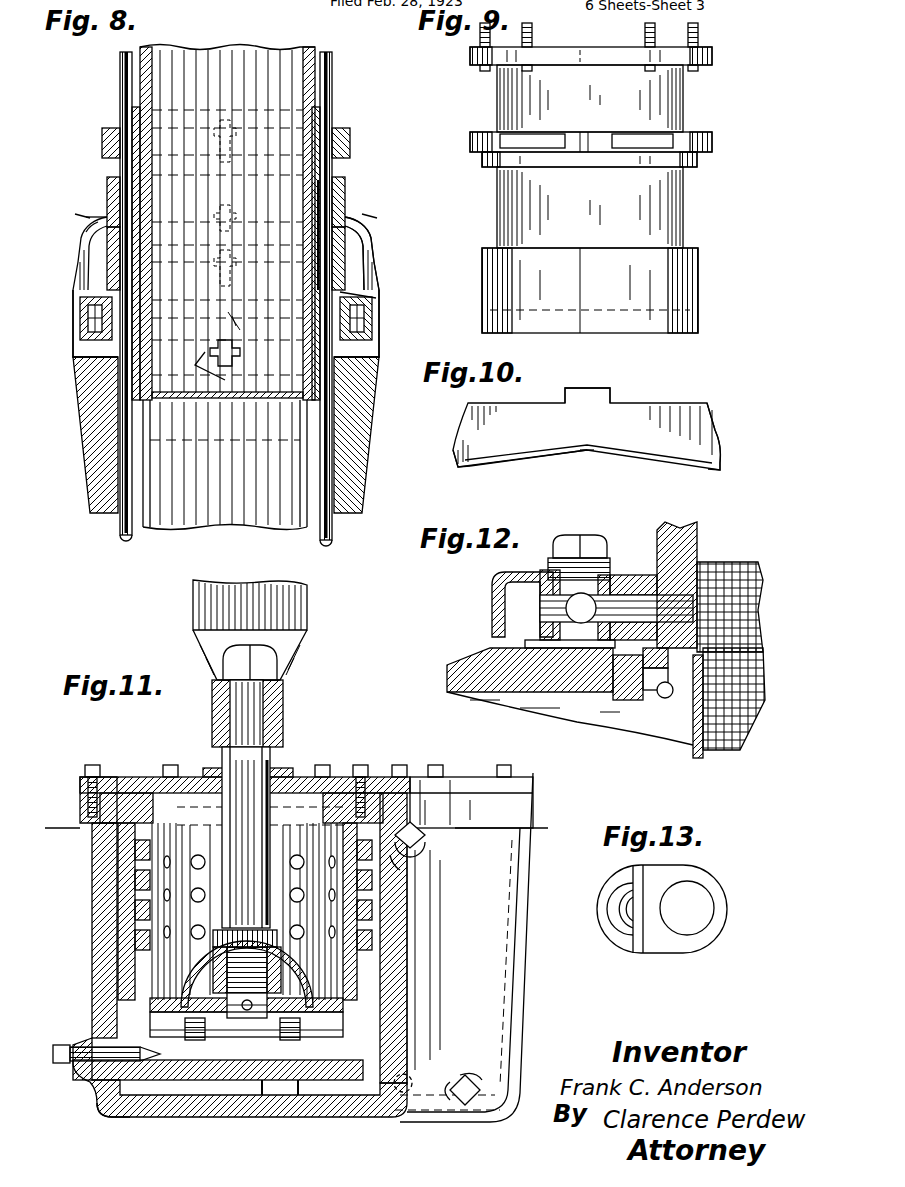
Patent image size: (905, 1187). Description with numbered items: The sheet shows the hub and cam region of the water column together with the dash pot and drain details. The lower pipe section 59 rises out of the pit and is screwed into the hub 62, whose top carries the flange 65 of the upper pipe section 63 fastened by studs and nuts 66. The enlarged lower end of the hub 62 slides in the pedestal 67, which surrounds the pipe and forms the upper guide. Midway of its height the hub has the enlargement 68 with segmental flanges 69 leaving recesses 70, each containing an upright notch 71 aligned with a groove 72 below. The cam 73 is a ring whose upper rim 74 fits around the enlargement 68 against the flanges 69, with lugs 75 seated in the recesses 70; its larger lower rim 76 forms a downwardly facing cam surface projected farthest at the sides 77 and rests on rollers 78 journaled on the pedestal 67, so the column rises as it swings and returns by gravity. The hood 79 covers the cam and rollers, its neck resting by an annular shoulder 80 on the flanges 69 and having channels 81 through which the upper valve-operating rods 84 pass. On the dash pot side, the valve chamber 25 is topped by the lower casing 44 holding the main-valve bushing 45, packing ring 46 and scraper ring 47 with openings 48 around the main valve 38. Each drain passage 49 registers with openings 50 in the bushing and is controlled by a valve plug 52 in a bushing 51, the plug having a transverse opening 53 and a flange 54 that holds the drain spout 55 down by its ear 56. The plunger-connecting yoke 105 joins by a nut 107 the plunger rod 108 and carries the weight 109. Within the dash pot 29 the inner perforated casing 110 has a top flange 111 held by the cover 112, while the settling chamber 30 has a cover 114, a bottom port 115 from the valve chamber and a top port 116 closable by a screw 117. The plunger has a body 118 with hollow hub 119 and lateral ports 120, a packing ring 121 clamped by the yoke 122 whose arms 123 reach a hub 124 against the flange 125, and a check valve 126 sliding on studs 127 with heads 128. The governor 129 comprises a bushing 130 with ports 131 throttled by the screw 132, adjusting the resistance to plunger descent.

In FIG. 12, the valve chamber 25 is at (472, 660).
In FIG. 11, the dash pot 29 is at (92, 903).
In FIG. 11, the settling chamber 30 is at (508, 972).
In FIG. 12, the main valve 38 is at (692, 750).
In FIG. 12, the lower casing 44 is at (680, 545).
In FIG. 12, the main-valve bushing 45 is at (735, 575).
In FIG. 12, the main valve packing ring 46 is at (655, 690).
In FIG. 12, the scraper ring 47 is at (722, 735).
In FIG. 12, the openings 48 is at (660, 698).
In FIG. 12, the drain passage 49 is at (634, 575).
In FIG. 12, the openings 50 is at (688, 610).
In FIG. 12, the bushing 51 is at (585, 690).
In FIG. 12, the valve plug 52 is at (525, 644).
In FIG. 12, the transverse opening 53 is at (545, 572).
In FIG. 12, the annular flange 54 is at (568, 535).
In FIG. 12, the drain spout 55 is at (492, 590).
In FIG. 13, the drain spout 55 is at (620, 875).
In FIG. 12, the ear 56 is at (605, 572).
In FIG. 13, the ear 56 is at (728, 898).
In FIG. 8, the lower pipe section 59 is at (175, 528).
In FIG. 8, the hub 62 is at (318, 158).
In FIG. 9, the hub 62 is at (497, 213).
In FIG. 8, the upper pipe section 63 is at (316, 92).
In FIG. 8, the flange 65 is at (350, 130).
In FIG. 9, the studs and nuts 66 is at (492, 30).
In FIG. 8, the pedestal 67 is at (105, 375).
In FIG. 8, the enlargement 68 is at (100, 220).
In FIG. 9, the enlargement 68 is at (700, 160).
In FIG. 8, the segmental flanges 69 is at (86, 232).
In FIG. 9, the segmental flanges 69 is at (478, 132).
In FIG. 9, the recesses 70 is at (558, 136).
In FIG. 8, the notch 71 is at (107, 250).
In FIG. 9, the notch 71 is at (583, 152).
In FIG. 8, the groove 72 is at (98, 425).
In FIG. 9, the groove 72 is at (586, 258).
In FIG. 8, the cam 73 is at (372, 262).
In FIG. 10, the cam 73 is at (712, 425).
In FIG. 10, the upper rim 74 is at (650, 403).
In FIG. 8, the lugs 75 is at (78, 214).
In FIG. 10, the lugs 75 is at (588, 392).
In FIG. 8, the lower rim 76 is at (366, 285).
In FIG. 10, the lower rim 76 is at (522, 460).
In FIG. 8, the sides 77 is at (58, 290).
In FIG. 10, the sides 77 is at (456, 467).
In FIG. 8, the rollers 78 is at (82, 326).
In FIG. 8, the hood 79 is at (396, 352).
In FIG. 8, the annular shoulder 80 is at (322, 240).
In FIG. 8, the channels 81 is at (110, 180).
In FIG. 8, the upper valve-operating rods 84 is at (121, 90).
In FIG. 11, the plunger-connecting yoke 105 is at (284, 712).
In FIG. 11, the nut 107 is at (278, 668).
In FIG. 11, the dash-pot plunger rod 108 is at (272, 758).
In FIG. 11, the weight 109 is at (300, 636).
In FIG. 11, the inner perforated casing 110 is at (118, 950).
In FIG. 11, the annular flange 111 is at (115, 777).
In FIG. 11, the cover 112 is at (350, 777).
In FIG. 11, the cover 114 is at (463, 777).
In FIG. 11, the port 115 is at (408, 1075).
In FIG. 11, the port 116 is at (398, 868).
In FIG. 11, the screw 117 is at (425, 840).
In FIG. 11, the body 118 is at (150, 1008).
In FIG. 11, the hub 119 is at (235, 971).
In FIG. 11, the lateral ports 120 is at (248, 1020).
In FIG. 11, the packing ring 121 is at (395, 1010).
In FIG. 11, the clamp yoke 122 is at (395, 968).
In FIG. 11, the arms 123 is at (150, 985).
In FIG. 11, the ring-shaped hub 124 is at (268, 971).
In FIG. 11, the annular flange 125 is at (278, 933).
In FIG. 11, the check-valve 126 is at (300, 1038).
In FIG. 11, the studs 127 is at (175, 1082).
In FIG. 11, the heads 128 is at (205, 1040).
In FIG. 11, the governor 129 is at (100, 1100).
In FIG. 11, the bushing 130 is at (80, 1070).
In FIG. 11, the lateral ports 131 is at (125, 1095).
In FIG. 11, the screw 132 is at (62, 1046).